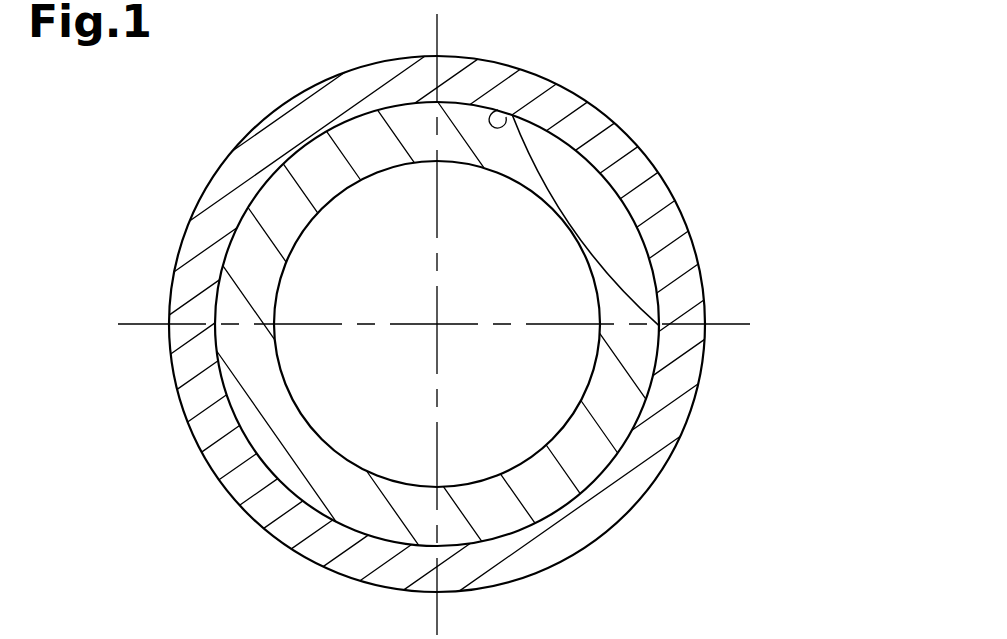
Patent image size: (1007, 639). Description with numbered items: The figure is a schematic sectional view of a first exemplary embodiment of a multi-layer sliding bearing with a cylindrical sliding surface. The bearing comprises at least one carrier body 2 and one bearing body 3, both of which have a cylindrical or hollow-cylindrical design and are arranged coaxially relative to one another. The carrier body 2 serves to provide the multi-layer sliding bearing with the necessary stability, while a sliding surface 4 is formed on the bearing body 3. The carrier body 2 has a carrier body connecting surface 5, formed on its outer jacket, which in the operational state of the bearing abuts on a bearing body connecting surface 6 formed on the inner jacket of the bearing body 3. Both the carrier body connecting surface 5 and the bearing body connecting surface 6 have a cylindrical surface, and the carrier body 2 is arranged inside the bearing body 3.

The carrier body 2 is at (628, 288).
The bearing body 3 is at (489, 324).
The sliding surface 4 is at (647, 155).
The carrier body connecting surface 5 is at (559, 133).
The bearing body connecting surface 6 is at (498, 110).